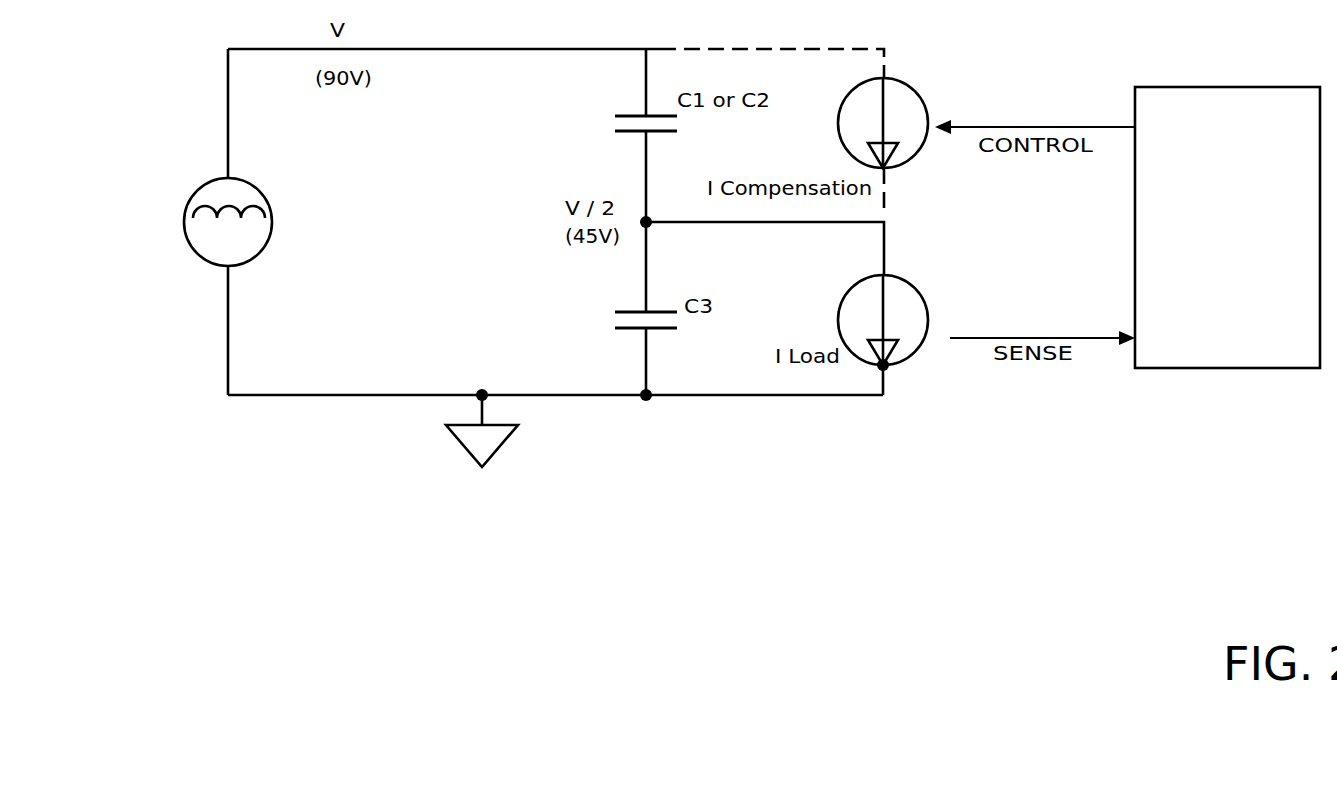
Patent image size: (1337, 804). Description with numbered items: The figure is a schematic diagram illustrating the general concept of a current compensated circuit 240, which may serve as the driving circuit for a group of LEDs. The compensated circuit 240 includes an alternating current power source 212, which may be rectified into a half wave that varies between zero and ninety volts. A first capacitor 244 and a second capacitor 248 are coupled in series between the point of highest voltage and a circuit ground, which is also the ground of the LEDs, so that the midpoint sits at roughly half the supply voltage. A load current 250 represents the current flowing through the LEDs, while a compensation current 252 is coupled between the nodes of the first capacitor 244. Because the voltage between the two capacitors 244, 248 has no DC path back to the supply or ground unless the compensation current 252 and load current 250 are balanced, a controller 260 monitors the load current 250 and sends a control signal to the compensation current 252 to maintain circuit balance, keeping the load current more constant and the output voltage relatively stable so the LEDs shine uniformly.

The alternating current power source 212 is at (191, 196).
The current compensated circuit 240 is at (668, 25).
The first capacitor 244 is at (628, 114).
The second capacitor 248 is at (628, 311).
The load current 250 is at (919, 296).
The compensation current 252 is at (919, 100).
The controller 260 is at (1240, 87).